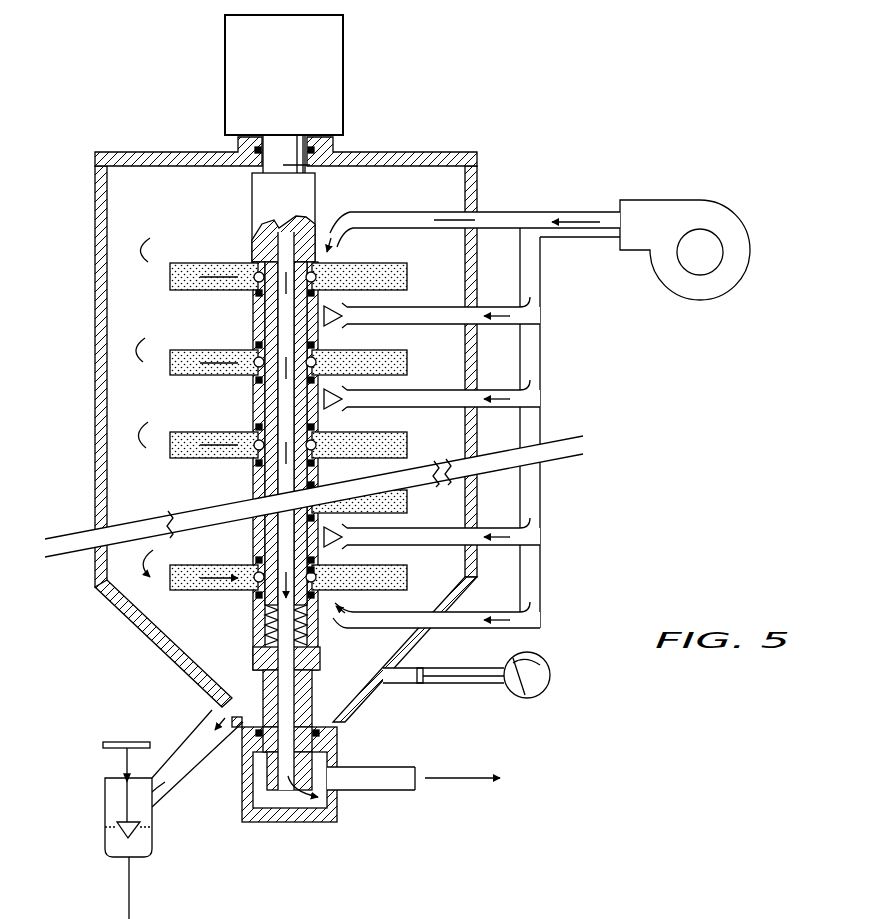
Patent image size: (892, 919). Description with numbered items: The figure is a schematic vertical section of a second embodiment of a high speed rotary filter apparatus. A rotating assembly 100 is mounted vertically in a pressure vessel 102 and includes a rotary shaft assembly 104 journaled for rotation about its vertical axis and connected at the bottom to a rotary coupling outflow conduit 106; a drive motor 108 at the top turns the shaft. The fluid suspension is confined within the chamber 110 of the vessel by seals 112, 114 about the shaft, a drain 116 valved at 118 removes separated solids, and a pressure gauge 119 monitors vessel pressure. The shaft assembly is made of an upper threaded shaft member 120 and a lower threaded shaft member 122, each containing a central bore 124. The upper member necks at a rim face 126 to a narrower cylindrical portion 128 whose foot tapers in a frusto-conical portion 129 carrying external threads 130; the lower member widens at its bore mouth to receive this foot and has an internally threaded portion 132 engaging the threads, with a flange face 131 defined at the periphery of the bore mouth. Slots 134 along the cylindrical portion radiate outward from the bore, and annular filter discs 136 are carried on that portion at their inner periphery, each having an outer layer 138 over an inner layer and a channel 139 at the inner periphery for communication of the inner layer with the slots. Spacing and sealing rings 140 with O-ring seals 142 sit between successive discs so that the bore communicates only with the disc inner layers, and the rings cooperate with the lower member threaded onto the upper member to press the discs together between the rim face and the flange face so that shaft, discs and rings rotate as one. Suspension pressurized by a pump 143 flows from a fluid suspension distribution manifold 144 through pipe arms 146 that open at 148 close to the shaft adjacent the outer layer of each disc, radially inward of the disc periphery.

The rotating assembly 100 is at (200, 225).
The pressure vessel 102 is at (475, 150).
The rotary shaft assembly 104 is at (392, 166).
The rotary coupling outflow conduit 106 is at (365, 795).
The drive motor 108 is at (315, 40).
The chamber 110 is at (120, 202).
The seal 112 is at (318, 152).
The seal 114 is at (320, 735).
The drain 116 is at (182, 762).
The valve 118 is at (105, 820).
The pressure gauge 119 is at (548, 688).
The upper threaded shaft member 120 is at (265, 183).
The lower threaded shaft member 122 is at (273, 692).
The bore 124 is at (286, 390).
The rim face 126 is at (256, 236).
The cylindrical portion 128 is at (268, 331).
The frusto-conical portion 129 is at (262, 603).
The external threads 130 is at (270, 640).
The flange face 131 is at (306, 573).
The internally threaded portion 132 is at (313, 640).
The slots 134 is at (259, 270).
The annular filter discs 136 is at (352, 266).
The outer layer 138 is at (376, 506).
The channel 139 is at (262, 448).
The spacing and sealing rings 140 is at (257, 308).
The seals 142 is at (314, 381).
The pump 143 is at (697, 217).
The fluid suspension distribution manifold 144 is at (540, 365).
The pipe arms 146 is at (503, 212).
The pipe opening 148 is at (350, 302).